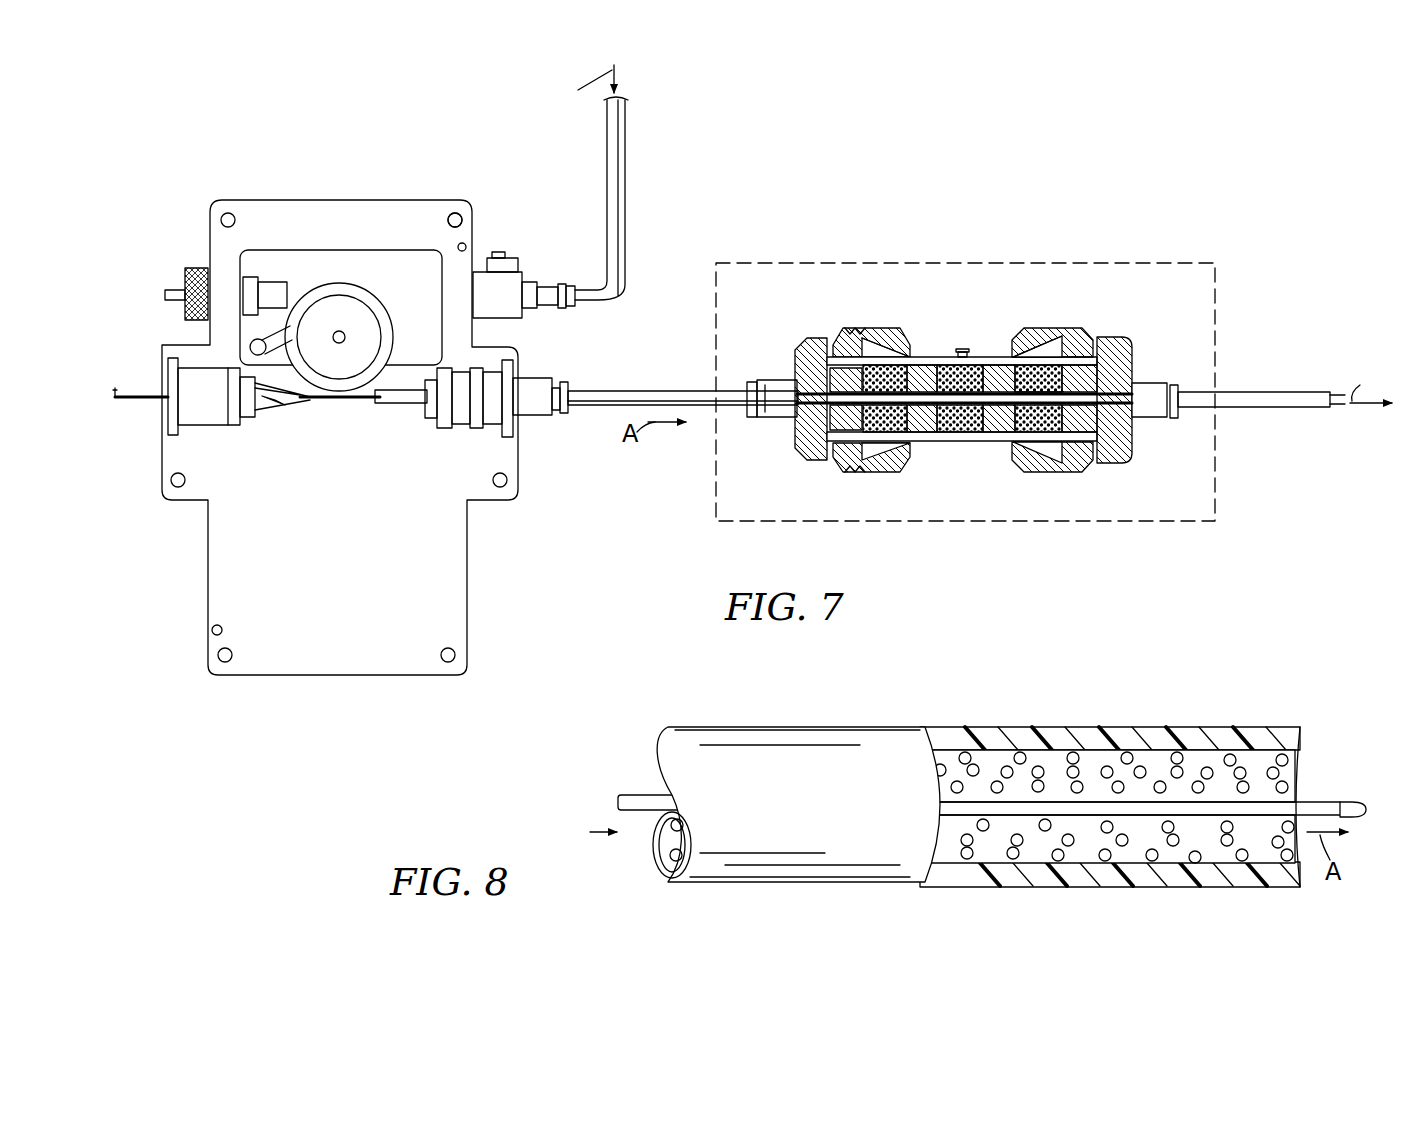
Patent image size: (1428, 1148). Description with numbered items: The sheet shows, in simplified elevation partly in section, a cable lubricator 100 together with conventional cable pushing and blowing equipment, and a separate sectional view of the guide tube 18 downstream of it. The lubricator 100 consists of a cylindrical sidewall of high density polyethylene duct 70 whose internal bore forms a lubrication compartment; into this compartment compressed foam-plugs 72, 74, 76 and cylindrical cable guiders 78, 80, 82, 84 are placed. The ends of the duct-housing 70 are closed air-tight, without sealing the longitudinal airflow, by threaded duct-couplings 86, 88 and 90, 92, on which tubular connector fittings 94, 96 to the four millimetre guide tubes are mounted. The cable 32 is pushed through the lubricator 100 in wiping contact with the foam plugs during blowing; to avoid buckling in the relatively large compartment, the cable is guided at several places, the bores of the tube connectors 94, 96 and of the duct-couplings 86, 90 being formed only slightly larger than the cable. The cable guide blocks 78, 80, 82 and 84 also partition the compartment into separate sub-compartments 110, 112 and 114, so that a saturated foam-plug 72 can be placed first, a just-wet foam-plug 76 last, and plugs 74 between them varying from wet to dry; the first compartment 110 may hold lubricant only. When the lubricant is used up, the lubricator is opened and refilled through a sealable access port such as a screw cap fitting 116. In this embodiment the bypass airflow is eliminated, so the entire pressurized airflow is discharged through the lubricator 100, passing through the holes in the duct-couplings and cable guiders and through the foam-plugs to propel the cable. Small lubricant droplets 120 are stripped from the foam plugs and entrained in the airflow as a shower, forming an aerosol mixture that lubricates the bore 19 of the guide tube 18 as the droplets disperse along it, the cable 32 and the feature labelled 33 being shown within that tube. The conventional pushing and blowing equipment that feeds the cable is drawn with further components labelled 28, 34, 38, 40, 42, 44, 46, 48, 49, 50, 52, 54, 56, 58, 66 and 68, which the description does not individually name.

In FIG. 7, the guide tube 18 is at (400, 399).
In FIG. 8, the guide tube 18 is at (1108, 742).
In FIG. 8, the bore 19 is at (1060, 757).
In FIG. 7, the pump assembly 28 is at (287, 192).
In FIG. 8, the cable 32 is at (628, 795).
In FIG. 8, the wire tip 33 is at (1347, 802).
In FIG. 7, the mounting plate 34 is at (470, 587).
In FIG. 7, the roller 38 is at (340, 305).
In FIG. 7, the lever 40 is at (250, 345).
In FIG. 7, the adjustment bolt 42 is at (272, 292).
In FIG. 7, the knurled knob 44 is at (197, 268).
In FIG. 7, the guide 46 is at (262, 403).
In FIG. 7, the inlet fitting 48 is at (208, 412).
In FIG. 7, the outlet nut 49 is at (470, 428).
In FIG. 7, the outlet fitting 50 is at (537, 382).
In FIG. 7, the hose fitting 52 is at (550, 290).
In FIG. 7, the valve 54 is at (517, 282).
In FIG. 7, the mounting hole 56 is at (458, 208).
In FIG. 7, the hole 58 is at (467, 243).
In FIG. 7, the supply pipe 66 is at (607, 175).
In FIG. 7, the housing 68 is at (452, 312).
In FIG. 7, the duct 70 is at (947, 357).
In FIG. 7, the foam-plug 72 is at (915, 420).
In FIG. 7, the foam-plug 74 is at (975, 420).
In FIG. 7, the foam-plug 76 is at (1047, 418).
In FIG. 7, the cable guider 78 is at (842, 373).
In FIG. 7, the cable guider 80 is at (930, 366).
In FIG. 7, the cable guider 82 is at (1007, 368).
In FIG. 7, the cable guider 84 is at (1092, 373).
In FIG. 7, the duct-coupling 86 is at (800, 458).
In FIG. 7, the duct-coupling 88 is at (890, 463).
In FIG. 7, the duct-coupling 90 is at (1127, 342).
In FIG. 7, the duct-coupling 92 is at (1013, 457).
In FIG. 7, the tubular connector fitting 94 is at (782, 377).
In FIG. 7, the tubular connector fitting 96 is at (1143, 383).
In FIG. 7, the cable lubricator 100 is at (1058, 262).
In FIG. 7, the sub-compartment 110 is at (873, 420).
In FIG. 7, the sub-compartment 112 is at (950, 422).
In FIG. 7, the sub-compartment 114 is at (1040, 370).
In FIG. 7, the screw cap fitting 116 is at (963, 352).
In FIG. 8, the lubricant droplets 120 is at (1160, 790).